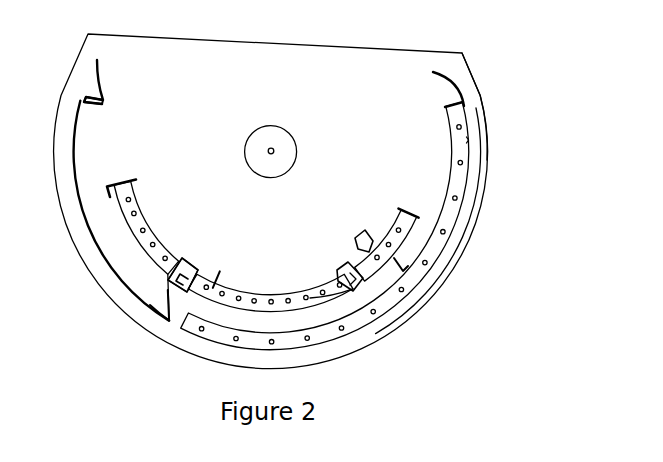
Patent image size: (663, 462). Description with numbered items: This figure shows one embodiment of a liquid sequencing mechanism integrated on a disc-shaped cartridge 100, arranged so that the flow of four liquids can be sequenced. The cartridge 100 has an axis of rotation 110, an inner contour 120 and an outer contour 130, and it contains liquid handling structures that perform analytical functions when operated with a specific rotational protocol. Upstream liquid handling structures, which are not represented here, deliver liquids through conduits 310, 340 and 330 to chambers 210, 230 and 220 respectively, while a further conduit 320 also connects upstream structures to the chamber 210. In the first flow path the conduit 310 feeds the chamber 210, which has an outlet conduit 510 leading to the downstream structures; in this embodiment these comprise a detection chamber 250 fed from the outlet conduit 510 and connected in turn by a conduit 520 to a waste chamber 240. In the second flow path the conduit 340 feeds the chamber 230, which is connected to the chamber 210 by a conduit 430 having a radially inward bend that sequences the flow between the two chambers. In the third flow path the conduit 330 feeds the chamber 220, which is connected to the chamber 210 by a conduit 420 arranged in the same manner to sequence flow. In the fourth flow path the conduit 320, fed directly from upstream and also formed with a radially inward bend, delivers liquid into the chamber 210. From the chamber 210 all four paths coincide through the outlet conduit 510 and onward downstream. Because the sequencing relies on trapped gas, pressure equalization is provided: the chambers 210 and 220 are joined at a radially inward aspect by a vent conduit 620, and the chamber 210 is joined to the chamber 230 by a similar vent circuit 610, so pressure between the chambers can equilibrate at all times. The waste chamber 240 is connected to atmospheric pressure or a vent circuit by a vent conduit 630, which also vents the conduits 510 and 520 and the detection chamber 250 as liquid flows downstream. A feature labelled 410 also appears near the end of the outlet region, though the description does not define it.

The cartridge 100 is at (305, 62).
The axis of rotation 110 is at (276, 146).
The inner contour 120 is at (301, 178).
The outer contour 130 is at (488, 150).
The chamber 210 is at (270, 269).
The chamber 220 is at (180, 257).
The chamber 230 is at (397, 223).
The waste chamber 240 is at (450, 183).
The detection chamber 250 is at (110, 102).
The conduit 310 is at (244, 290).
The conduit 320 is at (163, 210).
The conduit 330 is at (145, 245).
The conduit 340 is at (356, 238).
The band end 410 is at (170, 303).
The conduit 420 is at (173, 302).
The conduit 430 is at (353, 288).
The outlet conduit 510 is at (78, 152).
The conduit 520 is at (103, 68).
The vent circuit 610 is at (337, 270).
The vent conduit 620 is at (198, 262).
The vent conduit 630 is at (403, 264).